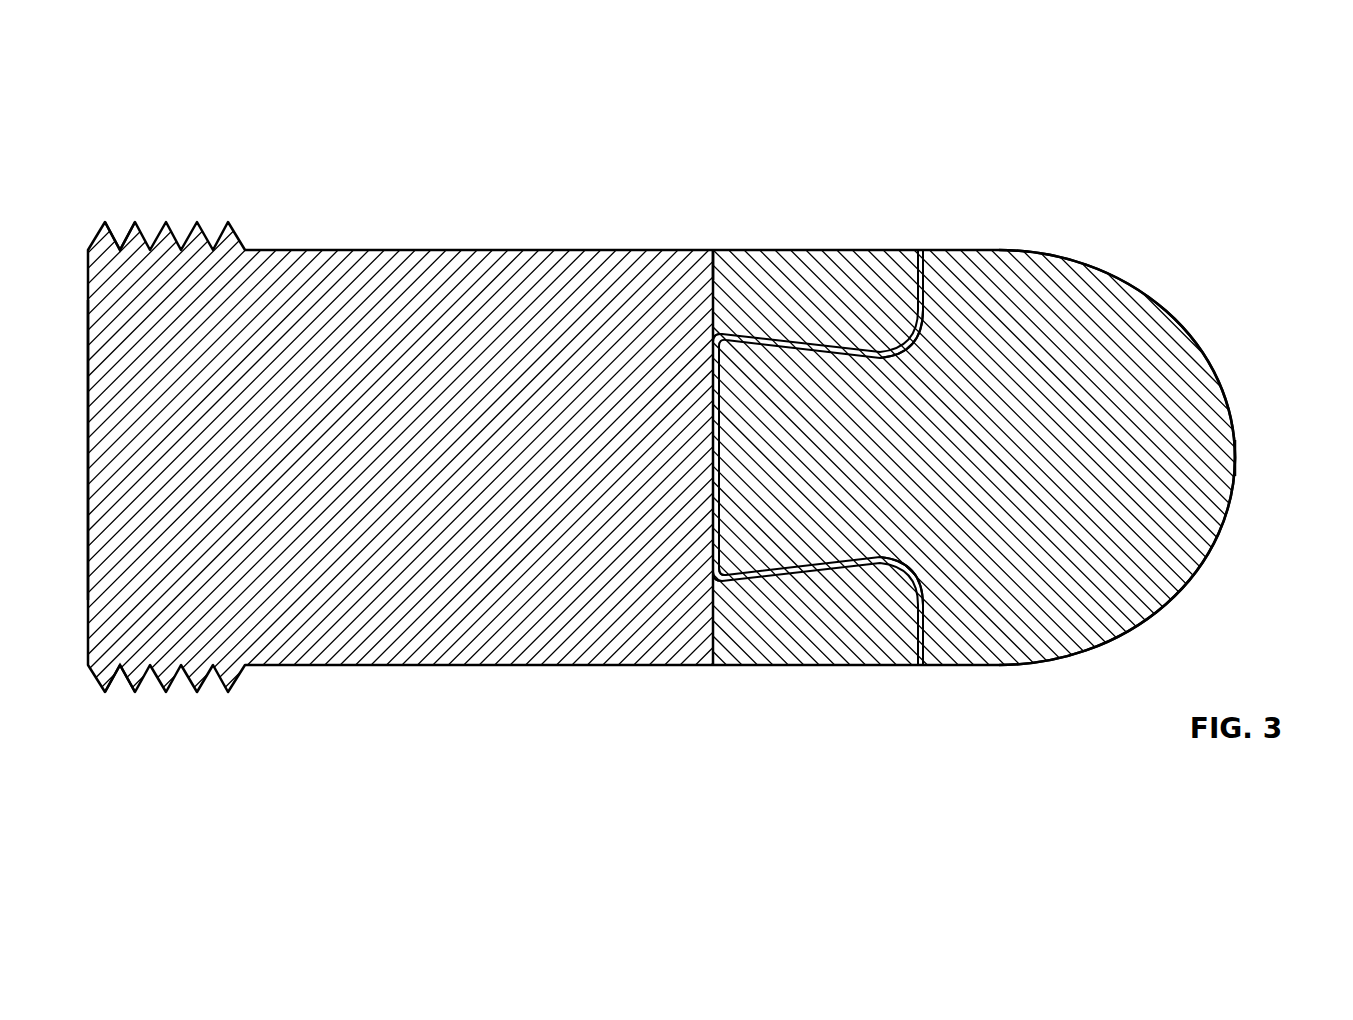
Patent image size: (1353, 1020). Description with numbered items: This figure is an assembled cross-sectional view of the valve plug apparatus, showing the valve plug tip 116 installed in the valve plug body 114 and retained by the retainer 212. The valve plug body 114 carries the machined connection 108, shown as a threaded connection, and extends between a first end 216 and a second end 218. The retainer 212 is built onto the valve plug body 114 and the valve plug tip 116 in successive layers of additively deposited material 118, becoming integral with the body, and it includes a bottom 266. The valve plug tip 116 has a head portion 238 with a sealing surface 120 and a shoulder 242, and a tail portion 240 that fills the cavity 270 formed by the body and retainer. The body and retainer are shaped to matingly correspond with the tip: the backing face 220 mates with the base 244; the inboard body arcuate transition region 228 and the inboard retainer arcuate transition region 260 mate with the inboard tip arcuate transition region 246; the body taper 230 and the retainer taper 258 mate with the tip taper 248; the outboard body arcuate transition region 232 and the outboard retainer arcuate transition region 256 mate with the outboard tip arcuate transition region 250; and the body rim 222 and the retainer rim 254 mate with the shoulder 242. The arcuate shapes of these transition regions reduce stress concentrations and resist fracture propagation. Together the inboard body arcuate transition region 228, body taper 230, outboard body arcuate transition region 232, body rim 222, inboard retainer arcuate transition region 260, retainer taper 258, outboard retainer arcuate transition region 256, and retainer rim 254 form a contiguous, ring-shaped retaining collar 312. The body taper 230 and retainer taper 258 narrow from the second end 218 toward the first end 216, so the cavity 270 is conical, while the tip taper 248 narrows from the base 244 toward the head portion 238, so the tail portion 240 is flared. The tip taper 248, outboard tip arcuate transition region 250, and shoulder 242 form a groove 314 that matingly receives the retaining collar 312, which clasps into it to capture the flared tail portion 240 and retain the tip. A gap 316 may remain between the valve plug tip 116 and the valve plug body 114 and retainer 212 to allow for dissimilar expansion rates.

The machined connection 108 is at (190, 692).
The valve plug body 114 is at (448, 287).
The valve plug tip 116 is at (973, 637).
The additively deposited material 118 is at (767, 267).
The sealing surface 120 is at (1100, 532).
The retainer 212 is at (793, 280).
The first end 216 is at (935, 479).
The second end 218 is at (72, 466).
The backing face 220 is at (712, 492).
The body rim 222 is at (917, 620).
The inboard body arcuate transition region 228 is at (704, 586).
The body taper 230 is at (763, 582).
The outboard body arcuate transition region 232 is at (884, 572).
The head portion 238 is at (1172, 452).
The tail portion 240 is at (822, 497).
The shoulder 242 is at (930, 273).
The base 244 is at (720, 437).
The inboard tip arcuate transition region 246 is at (726, 560).
The tip taper 248 is at (806, 348).
The outboard tip arcuate transition region 250 is at (915, 556).
The retainer rim 254 is at (918, 262).
The outboard retainer arcuate transition region 256 is at (897, 338).
The retainer taper 258 is at (826, 340).
The inboard retainer arcuate transition region 260 is at (722, 316).
The bottom 266 is at (715, 263).
The cavity 270 is at (823, 413).
The retaining collar 312 is at (832, 588).
The groove 314 is at (927, 362).
The gap 316 is at (922, 678).